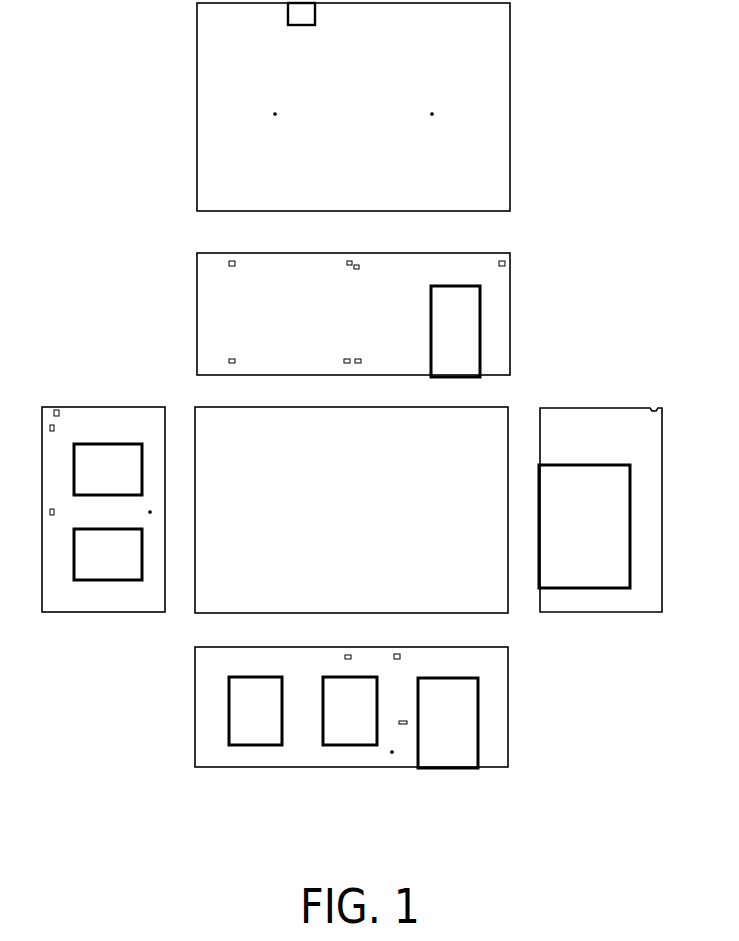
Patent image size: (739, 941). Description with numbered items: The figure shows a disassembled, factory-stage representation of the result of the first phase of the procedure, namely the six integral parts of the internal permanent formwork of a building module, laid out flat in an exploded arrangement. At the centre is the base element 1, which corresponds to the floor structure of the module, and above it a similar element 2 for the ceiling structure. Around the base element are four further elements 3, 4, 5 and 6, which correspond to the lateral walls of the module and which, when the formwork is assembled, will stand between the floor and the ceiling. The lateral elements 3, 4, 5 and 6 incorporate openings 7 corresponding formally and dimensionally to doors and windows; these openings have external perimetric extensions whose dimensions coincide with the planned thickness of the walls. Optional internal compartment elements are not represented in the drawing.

The base element 1 is at (215, 433).
The ceiling element 2 is at (497, 168).
The lateral element 3 is at (497, 733).
The lateral element 4 is at (578, 597).
The lateral element 5 is at (495, 353).
The lateral element 6 is at (105, 595).
The opening 7 is at (470, 323).